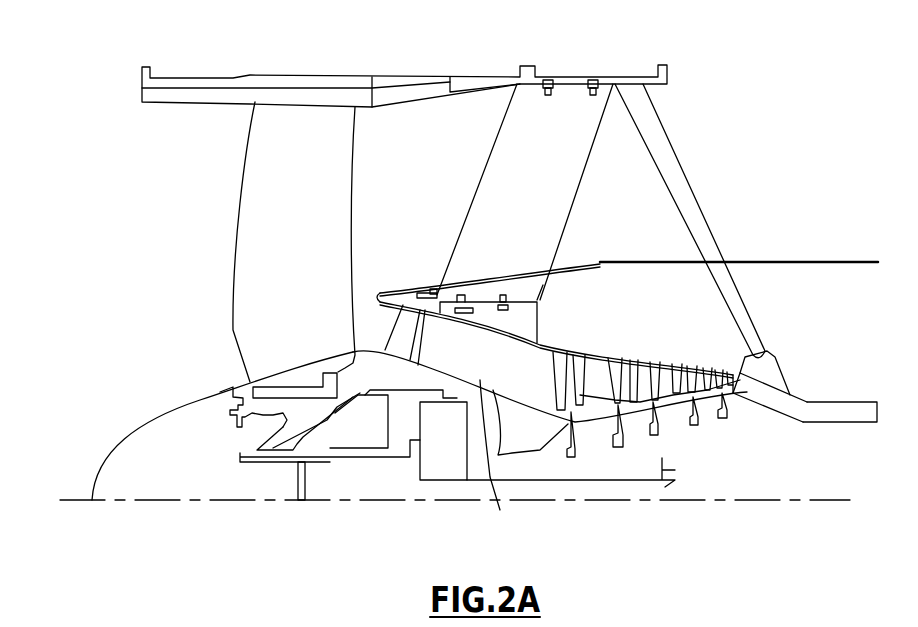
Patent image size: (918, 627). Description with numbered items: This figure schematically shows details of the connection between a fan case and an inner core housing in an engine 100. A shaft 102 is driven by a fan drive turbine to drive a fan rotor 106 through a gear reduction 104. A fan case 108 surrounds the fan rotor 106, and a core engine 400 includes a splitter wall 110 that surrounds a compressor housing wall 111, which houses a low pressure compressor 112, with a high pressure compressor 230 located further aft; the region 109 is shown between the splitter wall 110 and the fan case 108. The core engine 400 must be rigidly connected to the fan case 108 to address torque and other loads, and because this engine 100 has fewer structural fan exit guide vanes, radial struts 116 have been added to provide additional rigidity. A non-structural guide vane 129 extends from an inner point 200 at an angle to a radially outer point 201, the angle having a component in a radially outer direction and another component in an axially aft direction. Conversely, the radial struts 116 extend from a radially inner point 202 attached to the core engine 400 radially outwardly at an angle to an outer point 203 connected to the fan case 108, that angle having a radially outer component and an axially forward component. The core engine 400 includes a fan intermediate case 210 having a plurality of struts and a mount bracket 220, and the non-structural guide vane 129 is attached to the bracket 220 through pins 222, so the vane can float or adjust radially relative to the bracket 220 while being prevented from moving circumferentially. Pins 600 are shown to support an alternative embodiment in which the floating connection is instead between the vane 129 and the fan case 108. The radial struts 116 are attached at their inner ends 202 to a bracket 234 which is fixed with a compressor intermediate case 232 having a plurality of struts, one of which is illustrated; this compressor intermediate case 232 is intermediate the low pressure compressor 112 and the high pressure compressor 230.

The engine 100 is at (166, 306).
The shaft 102 is at (523, 470).
The gear reduction 104 is at (455, 483).
The fan rotor 106 is at (270, 238).
The fan case 108 is at (397, 92).
The cavity 109 is at (685, 300).
The splitter wall 110 is at (583, 262).
The compressor housing wall 111 is at (562, 352).
The low pressure compressor 112 is at (633, 387).
The radial struts 116 is at (678, 170).
The non-structural guide vane 129 is at (551, 124).
The inner point 200 is at (441, 293).
The radially outer point 201 is at (512, 86).
The radially inner point 202 is at (765, 350).
The outer point 203 is at (660, 78).
The fan intermediate case 210 is at (441, 435).
The mount bracket 220 is at (405, 290).
The pins 222 is at (503, 295).
The high pressure compressor 230 is at (835, 422).
The compressor intermediate case 232 is at (797, 393).
The bracket 234 is at (770, 362).
The core engine 400 is at (750, 300).
The pins 600 is at (548, 80).